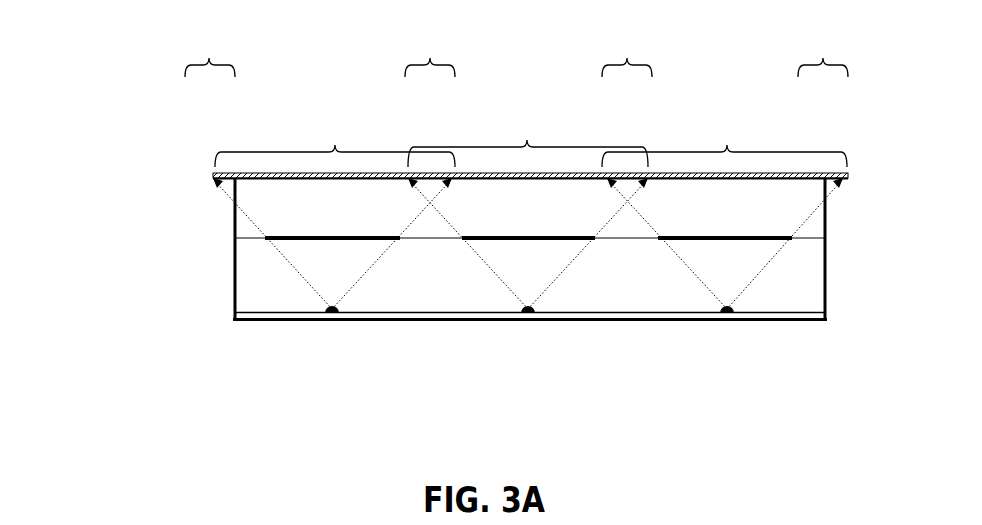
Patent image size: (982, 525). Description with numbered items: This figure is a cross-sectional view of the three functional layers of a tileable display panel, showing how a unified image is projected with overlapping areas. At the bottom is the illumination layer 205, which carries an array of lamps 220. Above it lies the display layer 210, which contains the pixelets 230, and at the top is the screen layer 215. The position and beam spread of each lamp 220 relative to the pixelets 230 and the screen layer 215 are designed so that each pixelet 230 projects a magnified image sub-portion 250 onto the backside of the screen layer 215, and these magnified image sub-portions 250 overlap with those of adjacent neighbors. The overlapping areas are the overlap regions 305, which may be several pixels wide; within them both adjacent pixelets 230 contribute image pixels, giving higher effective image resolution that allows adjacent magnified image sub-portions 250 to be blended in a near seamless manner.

The illumination layer 205 is at (207, 317).
The display layer 210 is at (207, 238).
The screen layer 215 is at (207, 177).
The lamp 220 is at (335, 320).
The pixelet 230 is at (340, 236).
The magnified image sub-portion 250 is at (531, 131).
The overlap region 305 is at (518, 42).